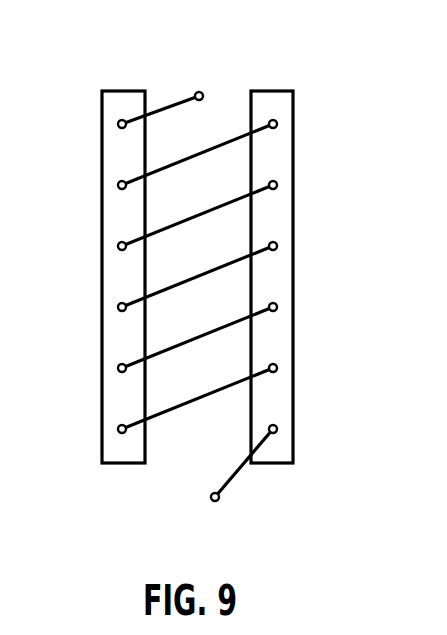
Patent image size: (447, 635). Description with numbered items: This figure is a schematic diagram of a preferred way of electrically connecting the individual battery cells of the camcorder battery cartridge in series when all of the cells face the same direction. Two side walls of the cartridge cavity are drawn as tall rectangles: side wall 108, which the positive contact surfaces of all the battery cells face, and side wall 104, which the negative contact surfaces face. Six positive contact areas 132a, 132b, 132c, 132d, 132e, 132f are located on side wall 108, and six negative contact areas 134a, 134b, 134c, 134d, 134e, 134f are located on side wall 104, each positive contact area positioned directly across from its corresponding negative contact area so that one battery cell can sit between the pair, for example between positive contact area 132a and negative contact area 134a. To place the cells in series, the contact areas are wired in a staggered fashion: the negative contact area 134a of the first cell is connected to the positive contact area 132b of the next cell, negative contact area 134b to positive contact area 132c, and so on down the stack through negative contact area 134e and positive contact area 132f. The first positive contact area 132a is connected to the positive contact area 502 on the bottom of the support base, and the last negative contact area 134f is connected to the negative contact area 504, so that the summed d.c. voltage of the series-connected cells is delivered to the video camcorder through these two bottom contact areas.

The side wall 108 is at (121, 91).
The side wall 104 is at (268, 91).
The positive contact area 502 is at (174, 92).
The negative contact area 504 is at (229, 483).
The positive contact area 132a is at (87, 125).
The positive contact area 132b is at (87, 186).
The positive contact area 132c is at (87, 247).
The positive contact area 132d is at (87, 308).
The positive contact area 132e is at (87, 369).
The positive contact area 132f is at (87, 430).
The negative contact area 134a is at (309, 126).
The negative contact area 134b is at (309, 187).
The negative contact area 134c is at (309, 248).
The negative contact area 134d is at (309, 309).
The negative contact area 134e is at (309, 370).
The negative contact area 134f is at (310, 431).